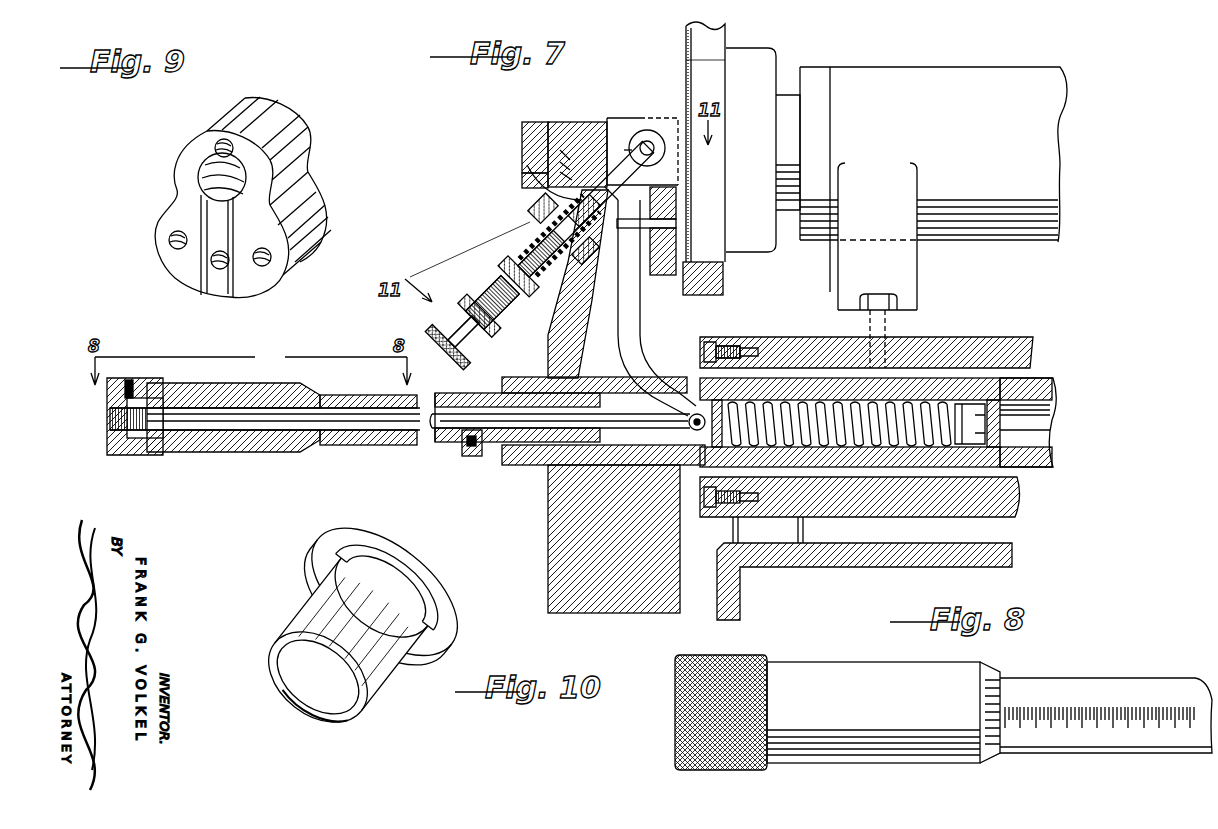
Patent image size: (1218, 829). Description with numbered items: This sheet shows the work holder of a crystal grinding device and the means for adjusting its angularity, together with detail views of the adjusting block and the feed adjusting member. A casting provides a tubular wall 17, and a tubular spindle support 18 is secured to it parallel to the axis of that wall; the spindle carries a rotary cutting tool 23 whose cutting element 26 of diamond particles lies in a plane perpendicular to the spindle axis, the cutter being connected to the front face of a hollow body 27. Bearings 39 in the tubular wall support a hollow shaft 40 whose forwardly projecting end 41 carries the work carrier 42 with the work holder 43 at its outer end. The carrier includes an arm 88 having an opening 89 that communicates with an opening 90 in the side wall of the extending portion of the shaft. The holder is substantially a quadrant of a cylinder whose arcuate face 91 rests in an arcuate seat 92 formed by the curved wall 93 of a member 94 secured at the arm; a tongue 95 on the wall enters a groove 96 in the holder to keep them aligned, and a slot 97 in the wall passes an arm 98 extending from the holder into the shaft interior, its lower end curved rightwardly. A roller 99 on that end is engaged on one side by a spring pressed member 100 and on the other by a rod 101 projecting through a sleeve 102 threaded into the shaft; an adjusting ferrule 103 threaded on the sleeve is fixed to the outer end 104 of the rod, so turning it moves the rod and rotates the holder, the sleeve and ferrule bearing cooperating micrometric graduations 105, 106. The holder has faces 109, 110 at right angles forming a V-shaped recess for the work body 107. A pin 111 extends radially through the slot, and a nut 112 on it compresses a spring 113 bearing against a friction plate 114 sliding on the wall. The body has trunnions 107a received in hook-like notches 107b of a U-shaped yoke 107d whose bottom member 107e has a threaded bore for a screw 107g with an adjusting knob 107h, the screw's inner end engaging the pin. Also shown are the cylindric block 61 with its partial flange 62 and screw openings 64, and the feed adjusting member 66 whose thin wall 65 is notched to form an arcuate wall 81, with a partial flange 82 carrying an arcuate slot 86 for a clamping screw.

In FIG. 7, the tubular wall 17 is at (946, 338).
In FIG. 7, the tubular spindle support 18 is at (942, 75).
In FIG. 7, the rotary cutting tool 23 is at (722, 42).
In FIG. 7, the cutting element 26 is at (687, 60).
In FIG. 7, the hollow body 27 is at (757, 62).
In FIG. 7, the bearings 39 is at (806, 340).
In FIG. 7, the hollow shaft 40 is at (1048, 462).
In FIG. 7, the forwardly projecting end 41 is at (575, 458).
In FIG. 7, the work carrier 42 is at (583, 605).
In FIG. 7, the work holder 43 is at (577, 166).
In FIG. 9, the cylindric block 61 is at (283, 127).
In FIG. 9, the partial flange 62 is at (283, 222).
In FIG. 9, the openings 64 is at (163, 264).
In FIG. 10, the thin wall 65 is at (365, 683).
In FIG. 10, the feed adjusting member 66 is at (297, 612).
In FIG. 10, the arcuate wall 81 is at (327, 640).
In FIG. 10, the partial flange 82 is at (398, 575).
In FIG. 10, the arcuate slot 86 is at (384, 568).
In FIG. 7, the arm 88 is at (556, 345).
In FIG. 7, the opening 89 is at (608, 365).
In FIG. 7, the opening 90 is at (668, 378).
In FIG. 7, the arcuate face 91 is at (560, 150).
In FIG. 7, the arcuate seat 92 is at (560, 162).
In FIG. 7, the curved wall 93 is at (560, 172).
In FIG. 7, the member 94 is at (514, 209).
In FIG. 7, the tongue 95 is at (546, 122).
In FIG. 7, the groove 96 is at (567, 122).
In FIG. 7, the slot 97 is at (582, 300).
In FIG. 7, the arm 98 is at (724, 284).
In FIG. 7, the roller 99 is at (688, 428).
In FIG. 7, the spring pressed member 100 is at (740, 346).
In FIG. 7, the rod 101 is at (540, 418).
In FIG. 7, the sleeve 102 is at (350, 445).
In FIG. 7, the adjusting ferrule 103 is at (228, 452).
In FIG. 8, the adjusting ferrule 103 is at (880, 750).
In FIG. 7, the outer end 104 is at (110, 428).
In FIG. 8, the micrometric graduations 105 is at (1098, 712).
In FIG. 8, the micrometric graduations 106 is at (1000, 684).
In FIG. 7, the work body 107 is at (636, 145).
In FIG. 7, the trunnions 107a is at (646, 128).
In FIG. 7, the hook-like notches 107b is at (636, 130).
In FIG. 7, the U-shaped yoke 107d is at (508, 328).
In FIG. 7, the bottom member 107e is at (475, 304).
In FIG. 7, the screw 107g is at (448, 320).
In FIG. 7, the adjusting knob 107h is at (430, 330).
In FIG. 7, the face 109 is at (603, 118).
In FIG. 7, the face 110 is at (677, 204).
In FIG. 7, the pin 111 is at (562, 194).
In FIG. 7, the nut 112 is at (498, 266).
In FIG. 7, the spring 113 is at (535, 238).
In FIG. 7, the friction plate 114 is at (562, 284).